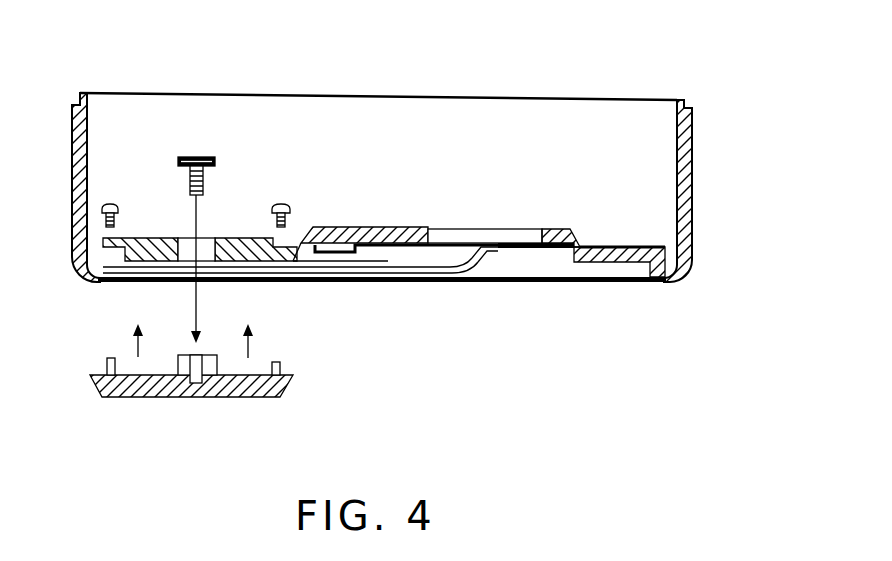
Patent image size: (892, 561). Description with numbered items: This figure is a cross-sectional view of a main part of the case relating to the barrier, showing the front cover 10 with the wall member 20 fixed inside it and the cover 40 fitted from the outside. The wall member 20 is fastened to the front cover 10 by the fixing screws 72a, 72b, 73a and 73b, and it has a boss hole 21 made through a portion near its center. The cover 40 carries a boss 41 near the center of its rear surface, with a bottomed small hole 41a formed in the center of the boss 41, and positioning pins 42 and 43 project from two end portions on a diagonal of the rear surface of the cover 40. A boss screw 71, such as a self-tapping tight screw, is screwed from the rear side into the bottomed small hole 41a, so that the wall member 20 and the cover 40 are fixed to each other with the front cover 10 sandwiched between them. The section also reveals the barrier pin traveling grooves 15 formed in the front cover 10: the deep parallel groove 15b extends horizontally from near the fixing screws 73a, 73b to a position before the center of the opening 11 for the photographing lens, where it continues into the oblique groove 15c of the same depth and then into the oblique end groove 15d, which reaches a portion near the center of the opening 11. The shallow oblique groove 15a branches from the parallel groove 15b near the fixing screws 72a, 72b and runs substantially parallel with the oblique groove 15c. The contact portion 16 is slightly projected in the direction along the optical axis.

The front cover 10 is at (694, 187).
The opening for the photographing lens 11 is at (481, 229).
The barrier pin traveling grooves 15 is at (338, 290).
The oblique groove (shallow groove) 15a is at (350, 227).
The parallel groove 15b is at (388, 274).
The oblique groove 15c is at (468, 275).
The oblique end groove 15d is at (504, 249).
The contact portion 16 is at (616, 263).
The wall member 20 is at (238, 237).
The boss hole 21 is at (206, 246).
The cover 40 is at (203, 379).
The boss 41 is at (188, 337).
The bottomed small hole 41a is at (192, 355).
The positioning pin 42 is at (281, 363).
The positioning pin 43 is at (107, 358).
The boss screw 71 is at (186, 157).
The fixing screw 72a is at (317, 177).
The fixing screw 72b is at (283, 204).
The fixing screw 73a is at (135, 200).
The fixing screw 73b is at (122, 193).